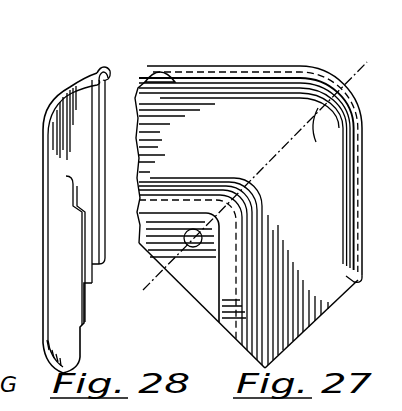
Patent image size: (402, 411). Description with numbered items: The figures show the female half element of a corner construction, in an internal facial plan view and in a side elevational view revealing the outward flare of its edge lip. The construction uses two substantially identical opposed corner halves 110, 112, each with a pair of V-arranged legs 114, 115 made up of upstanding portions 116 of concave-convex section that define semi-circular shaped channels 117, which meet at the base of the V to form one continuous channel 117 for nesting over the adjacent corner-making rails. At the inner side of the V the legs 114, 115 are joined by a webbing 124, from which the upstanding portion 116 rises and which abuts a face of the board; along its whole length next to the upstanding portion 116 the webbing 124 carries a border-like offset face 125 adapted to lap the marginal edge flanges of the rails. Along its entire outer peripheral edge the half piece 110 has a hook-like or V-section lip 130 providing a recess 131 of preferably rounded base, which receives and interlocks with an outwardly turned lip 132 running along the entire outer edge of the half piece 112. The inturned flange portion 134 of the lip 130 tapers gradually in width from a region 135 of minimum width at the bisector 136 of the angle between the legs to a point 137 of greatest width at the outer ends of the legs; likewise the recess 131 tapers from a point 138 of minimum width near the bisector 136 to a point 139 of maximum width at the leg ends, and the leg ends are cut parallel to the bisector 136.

In FIG. 28, the corner half 110 is at (40, 213).
In FIG. 27, the corner half 110 is at (290, 66).
In FIG. 28, the corner half 112 is at (24, 167).
In FIG. 27, the leg 114 is at (145, 102).
In FIG. 27, the leg 115 is at (306, 312).
In FIG. 28, the upstanding portion 116 is at (46, 110).
In FIG. 28, the channel 117 is at (70, 130).
In FIG. 27, the channel 117 is at (272, 140).
In FIG. 27, the webbing 124 is at (180, 280).
In FIG. 27, the offset face 125 is at (208, 321).
In FIG. 28, the lip 130 is at (97, 67).
In FIG. 27, the lip 130 is at (198, 71).
In FIG. 28, the recess 131 is at (99, 160).
In FIG. 28, the outwardly turned lip 132 is at (21, 148).
In FIG. 28, the inturned flange portion 134 is at (110, 66).
In FIG. 27, the inturned flange portion 134 is at (228, 73).
In FIG. 27, the region of minimum width 135 is at (330, 88).
In FIG. 27, the bisector 136 is at (313, 142).
In FIG. 27, the point of greatest width 137 is at (178, 76).
In FIG. 28, the point of minimum width 138 is at (98, 91).
In FIG. 28, the point of maximum width 139 is at (100, 250).